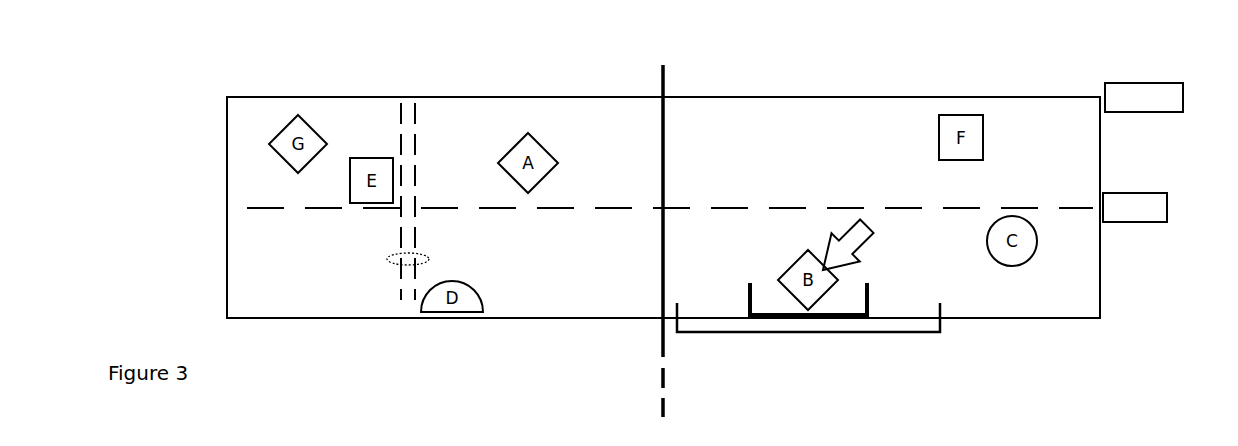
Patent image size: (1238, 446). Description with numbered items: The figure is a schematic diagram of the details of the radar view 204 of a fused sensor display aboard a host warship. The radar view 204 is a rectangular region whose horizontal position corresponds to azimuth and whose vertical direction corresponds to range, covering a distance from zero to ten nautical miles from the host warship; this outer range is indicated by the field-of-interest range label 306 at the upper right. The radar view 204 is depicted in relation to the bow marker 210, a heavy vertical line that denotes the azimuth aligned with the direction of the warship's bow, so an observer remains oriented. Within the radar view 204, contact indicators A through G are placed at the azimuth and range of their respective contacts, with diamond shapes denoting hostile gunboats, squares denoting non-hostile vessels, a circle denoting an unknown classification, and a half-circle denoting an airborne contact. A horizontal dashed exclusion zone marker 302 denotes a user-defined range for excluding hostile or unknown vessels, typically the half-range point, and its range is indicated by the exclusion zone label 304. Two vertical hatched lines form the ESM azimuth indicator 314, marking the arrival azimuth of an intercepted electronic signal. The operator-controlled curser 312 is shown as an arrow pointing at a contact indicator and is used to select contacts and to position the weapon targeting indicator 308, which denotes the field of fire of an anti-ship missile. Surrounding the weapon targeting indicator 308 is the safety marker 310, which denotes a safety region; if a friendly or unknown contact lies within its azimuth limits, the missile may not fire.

The radar view 204 is at (290, 38).
The bow marker 210 is at (708, 226).
The exclusion zone marker 302 is at (670, 185).
The exclusion zone label 304 is at (1151, 223).
The field-of-interest range label 306 is at (1152, 113).
The weapon targeting indicator 308 is at (773, 290).
The safety marker 310 is at (843, 308).
The curser 312 is at (885, 253).
The ESM azimuth indicator 314 is at (373, 274).